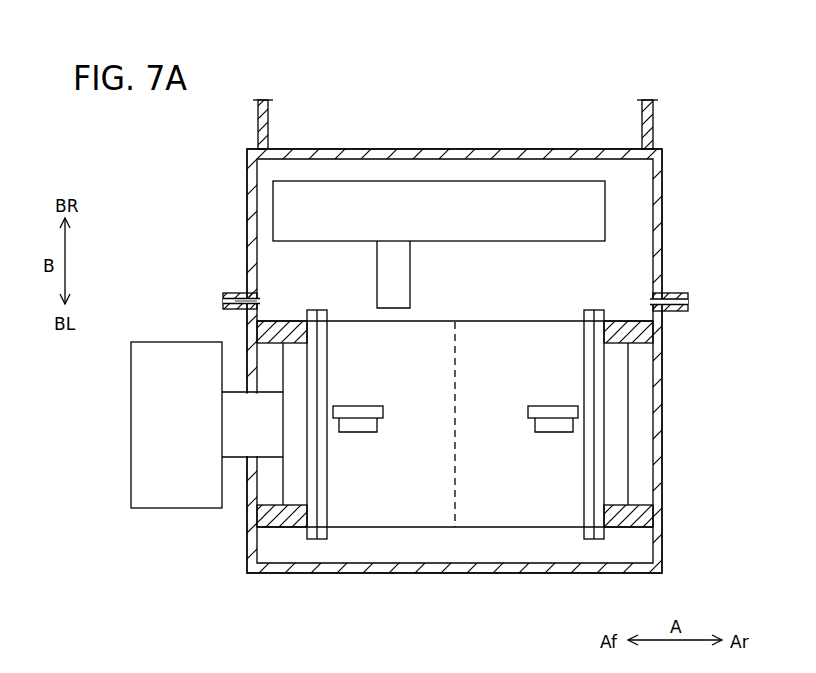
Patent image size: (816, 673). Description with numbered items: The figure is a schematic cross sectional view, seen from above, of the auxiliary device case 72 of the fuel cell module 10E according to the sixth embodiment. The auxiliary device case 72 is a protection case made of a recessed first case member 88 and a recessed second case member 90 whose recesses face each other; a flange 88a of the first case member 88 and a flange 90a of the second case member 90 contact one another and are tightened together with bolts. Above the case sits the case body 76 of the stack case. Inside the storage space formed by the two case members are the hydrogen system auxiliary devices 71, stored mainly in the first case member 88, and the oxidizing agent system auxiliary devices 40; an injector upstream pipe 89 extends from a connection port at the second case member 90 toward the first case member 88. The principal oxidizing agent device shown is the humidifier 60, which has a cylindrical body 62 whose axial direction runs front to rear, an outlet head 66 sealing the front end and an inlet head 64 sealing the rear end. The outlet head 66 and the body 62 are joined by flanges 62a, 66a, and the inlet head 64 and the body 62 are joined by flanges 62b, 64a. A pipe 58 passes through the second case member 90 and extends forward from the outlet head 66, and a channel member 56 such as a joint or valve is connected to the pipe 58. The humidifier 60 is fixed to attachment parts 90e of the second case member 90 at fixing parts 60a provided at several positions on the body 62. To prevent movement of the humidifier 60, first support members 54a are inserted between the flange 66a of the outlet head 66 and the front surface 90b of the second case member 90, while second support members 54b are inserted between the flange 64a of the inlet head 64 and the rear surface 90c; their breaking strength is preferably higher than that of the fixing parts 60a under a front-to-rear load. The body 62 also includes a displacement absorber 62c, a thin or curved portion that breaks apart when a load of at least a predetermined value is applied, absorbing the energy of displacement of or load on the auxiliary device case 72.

The fuel cell module 10E is at (156, 154).
The oxidizing agent system auxiliary devices 40 is at (512, 532).
The first support members 54a is at (273, 330).
The second support members 54b is at (635, 330).
The channel member 56 is at (153, 367).
The pipe 58 is at (240, 420).
The humidifier 60 is at (435, 532).
The fixing parts 60a is at (347, 432).
The body 62 is at (488, 340).
The flange 62a is at (322, 494).
The flange 62b is at (588, 494).
The displacement absorber 62c is at (458, 360).
The inlet head 64 is at (632, 390).
The flange 64a is at (600, 490).
The outlet head 66 is at (293, 364).
The flange 66a is at (310, 540).
The hydrogen system auxiliary devices 71 is at (488, 181).
The auxiliary device case 72 is at (665, 152).
The case body 76 is at (257, 122).
The first case member 88 is at (658, 190).
The flange 88a is at (248, 296).
The injector upstream pipe 89 is at (400, 272).
The second case member 90 is at (658, 450).
The flange 90a is at (235, 306).
The front surface 90b is at (252, 536).
The rear surface 90c is at (658, 413).
The attachment parts 90e is at (360, 412).